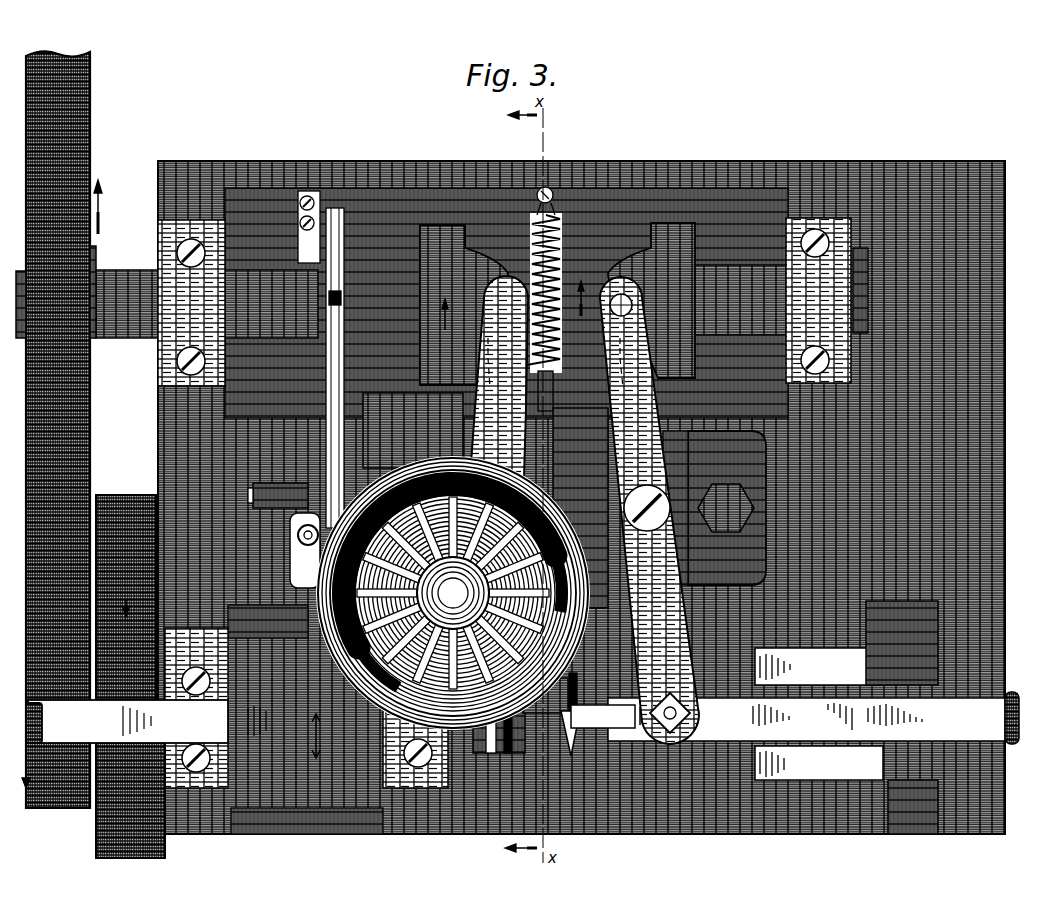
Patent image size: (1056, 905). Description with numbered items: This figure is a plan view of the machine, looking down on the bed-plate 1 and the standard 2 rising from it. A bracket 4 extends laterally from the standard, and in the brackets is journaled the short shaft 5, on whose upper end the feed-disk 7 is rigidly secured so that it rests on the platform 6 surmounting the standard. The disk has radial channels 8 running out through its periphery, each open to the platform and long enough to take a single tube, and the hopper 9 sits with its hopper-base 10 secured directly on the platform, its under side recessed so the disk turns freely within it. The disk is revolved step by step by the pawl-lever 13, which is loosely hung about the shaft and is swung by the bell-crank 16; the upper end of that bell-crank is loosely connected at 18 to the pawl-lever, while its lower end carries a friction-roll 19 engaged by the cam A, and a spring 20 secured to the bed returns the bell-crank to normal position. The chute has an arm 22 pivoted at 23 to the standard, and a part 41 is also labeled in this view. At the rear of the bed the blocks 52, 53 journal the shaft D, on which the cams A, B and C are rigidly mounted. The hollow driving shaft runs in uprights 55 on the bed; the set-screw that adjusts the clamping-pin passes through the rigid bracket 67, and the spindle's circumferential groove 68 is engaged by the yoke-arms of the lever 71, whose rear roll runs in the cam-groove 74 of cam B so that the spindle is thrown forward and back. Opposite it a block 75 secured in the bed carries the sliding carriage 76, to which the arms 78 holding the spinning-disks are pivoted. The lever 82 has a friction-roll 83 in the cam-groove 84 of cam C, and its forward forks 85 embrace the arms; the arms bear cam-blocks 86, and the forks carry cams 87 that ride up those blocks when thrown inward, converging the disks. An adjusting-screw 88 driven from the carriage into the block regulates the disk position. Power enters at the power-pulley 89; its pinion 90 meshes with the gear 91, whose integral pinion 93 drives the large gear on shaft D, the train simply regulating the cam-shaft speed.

The bed-plate 1 is at (677, 166).
The standard 2 is at (587, 501).
The bracket 4 is at (413, 430).
The short shaft 5 is at (481, 582).
The platform 6 is at (453, 593).
The feed-disk 7 is at (540, 578).
The radial channels 8 is at (560, 585).
The hopper 9 is at (432, 472).
The hopper-base 10 is at (383, 478).
The pawl-lever 13 is at (282, 540).
The bell-crank 16 is at (303, 457).
The connection 18 is at (16, 700).
The friction-roll 19 is at (340, 215).
The spring 20 is at (309, 227).
The arm 22 is at (545, 695).
The pivot 23 is at (572, 684).
The bar 41 is at (40, 340).
The block 52 is at (191, 303).
The block 53 is at (827, 300).
The uprights 55 is at (313, 699).
The rigid bracket 67 is at (147, 721).
The circumferential groove 68 is at (492, 745).
The lever 71 is at (499, 377).
The cam-groove 74 is at (498, 284).
The block 75 is at (498, 303).
The sliding carriage 76 is at (806, 719).
The arms 78 is at (603, 717).
The lever 82 is at (649, 510).
The friction-roll 83 is at (613, 308).
The cam-groove 84 is at (614, 284).
The forks 85 is at (665, 675).
The cam-blocks 86 is at (664, 700).
The cams 87 is at (640, 717).
The adjusting-screw 88 is at (1012, 700).
The power-pulley 89 is at (304, 726).
The pinion 90 is at (188, 708).
The gear 91 is at (114, 492).
The pinion 93 is at (40, 660).
The cam A is at (330, 288).
The cam B is at (464, 305).
The cam C is at (651, 300).
The shaft D is at (441, 301).